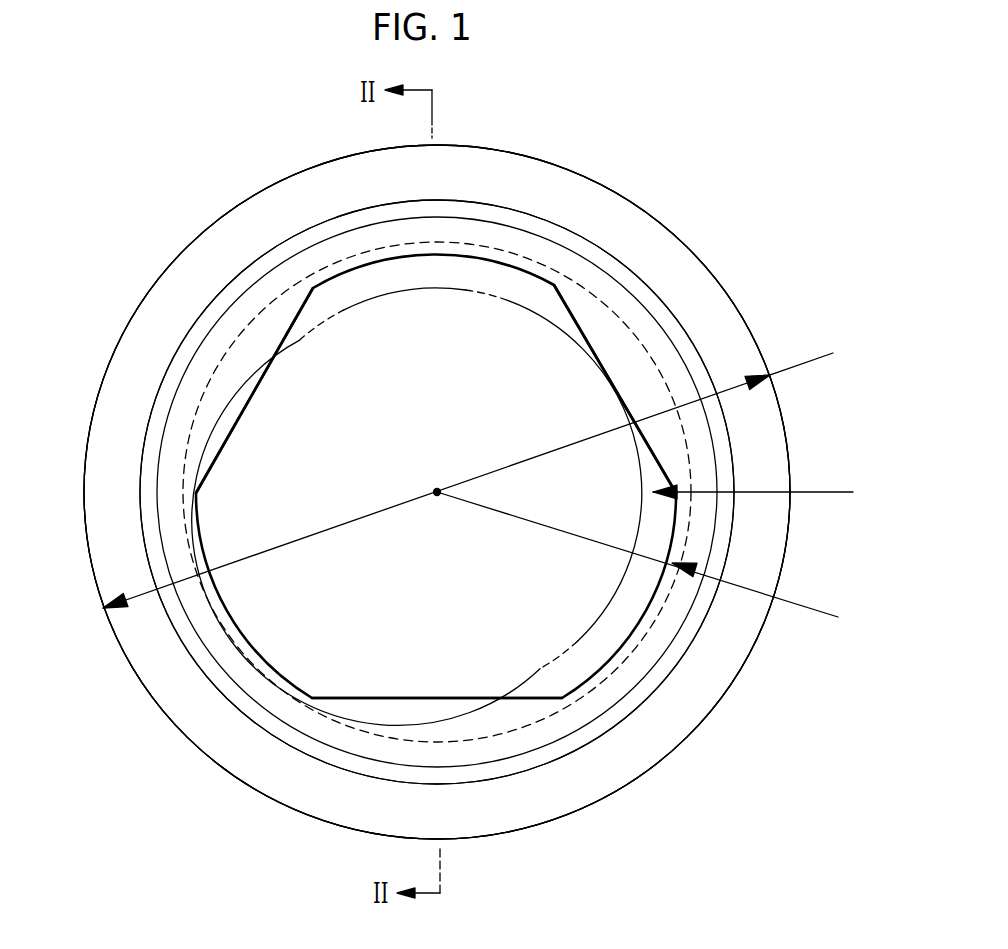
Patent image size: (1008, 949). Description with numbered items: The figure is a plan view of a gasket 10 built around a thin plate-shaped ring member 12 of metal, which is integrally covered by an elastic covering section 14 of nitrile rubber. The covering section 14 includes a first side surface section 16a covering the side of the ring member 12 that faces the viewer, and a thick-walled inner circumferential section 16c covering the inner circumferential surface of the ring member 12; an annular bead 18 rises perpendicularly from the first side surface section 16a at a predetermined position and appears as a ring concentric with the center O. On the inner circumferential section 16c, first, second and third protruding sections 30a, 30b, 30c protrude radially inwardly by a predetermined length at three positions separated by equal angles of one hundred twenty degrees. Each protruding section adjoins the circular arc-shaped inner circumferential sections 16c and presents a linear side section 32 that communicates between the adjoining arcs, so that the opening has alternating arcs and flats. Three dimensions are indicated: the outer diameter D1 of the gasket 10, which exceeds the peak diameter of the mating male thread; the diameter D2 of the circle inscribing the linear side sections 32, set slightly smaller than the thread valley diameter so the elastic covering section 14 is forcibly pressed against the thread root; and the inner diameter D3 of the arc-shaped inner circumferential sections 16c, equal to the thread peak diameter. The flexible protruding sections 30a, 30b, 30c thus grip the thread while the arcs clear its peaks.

The gasket 10 is at (612, 107).
The ring member 12 is at (250, 667).
The covering section 14 is at (645, 239).
The first side surface section 16a is at (657, 732).
The inner circumferential section 16c is at (428, 254).
The annular bead 18 is at (223, 683).
The first protruding section 30a is at (232, 407).
The second protruding section 30b is at (618, 368).
The third protruding section 30c is at (460, 717).
The linear side section 32 is at (253, 400).
The center O is at (435, 476).
The outer diameter D1 is at (484, 471).
The inscribing circle diameter D2 is at (770, 495).
The inner diameter of inner circumferential sections D3 is at (653, 565).